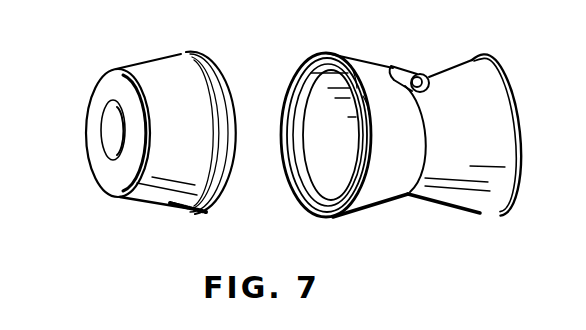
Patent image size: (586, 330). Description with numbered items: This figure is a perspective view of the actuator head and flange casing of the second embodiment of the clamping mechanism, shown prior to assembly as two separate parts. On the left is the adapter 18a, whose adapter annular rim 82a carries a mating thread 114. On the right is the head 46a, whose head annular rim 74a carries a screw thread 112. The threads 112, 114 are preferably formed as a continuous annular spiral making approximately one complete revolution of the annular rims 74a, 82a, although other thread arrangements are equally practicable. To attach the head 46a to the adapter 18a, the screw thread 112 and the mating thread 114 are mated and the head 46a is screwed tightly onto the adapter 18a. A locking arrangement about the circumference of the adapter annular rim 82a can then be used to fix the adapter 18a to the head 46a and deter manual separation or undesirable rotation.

The adapter 18a is at (143, 129).
The adapter annular rim 82a is at (183, 52).
The screw thread 112 is at (205, 213).
The head 46a is at (372, 77).
The mating thread 114 is at (380, 75).
The head annular rim 74a is at (401, 121).